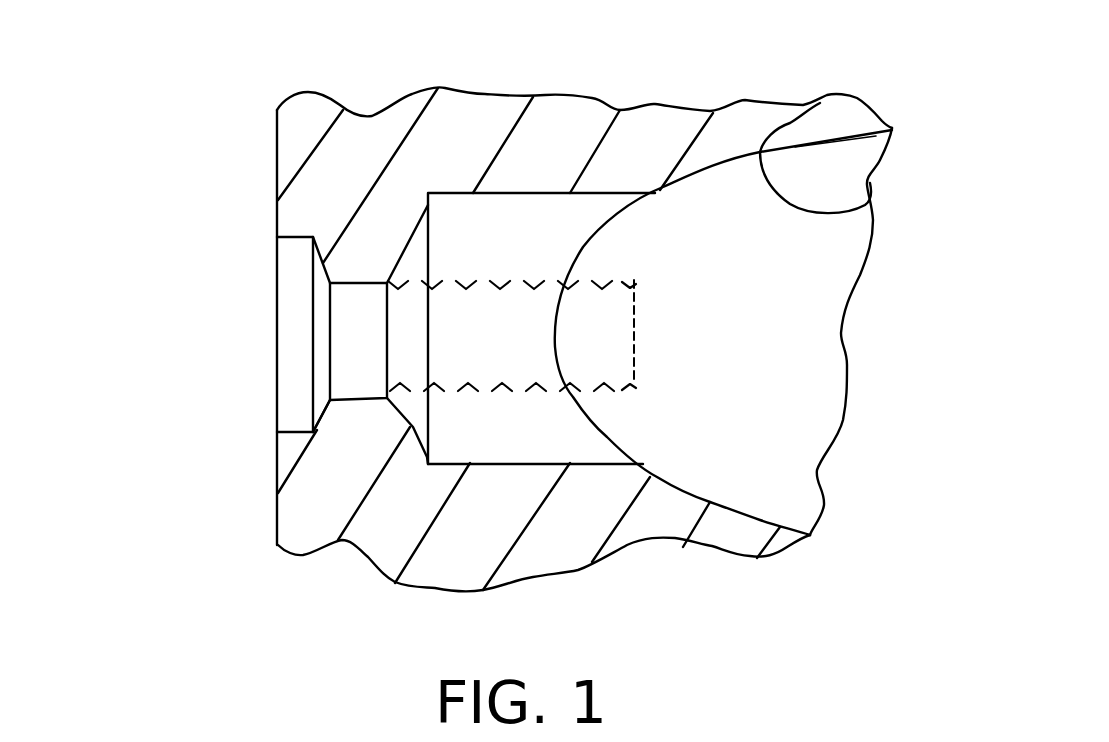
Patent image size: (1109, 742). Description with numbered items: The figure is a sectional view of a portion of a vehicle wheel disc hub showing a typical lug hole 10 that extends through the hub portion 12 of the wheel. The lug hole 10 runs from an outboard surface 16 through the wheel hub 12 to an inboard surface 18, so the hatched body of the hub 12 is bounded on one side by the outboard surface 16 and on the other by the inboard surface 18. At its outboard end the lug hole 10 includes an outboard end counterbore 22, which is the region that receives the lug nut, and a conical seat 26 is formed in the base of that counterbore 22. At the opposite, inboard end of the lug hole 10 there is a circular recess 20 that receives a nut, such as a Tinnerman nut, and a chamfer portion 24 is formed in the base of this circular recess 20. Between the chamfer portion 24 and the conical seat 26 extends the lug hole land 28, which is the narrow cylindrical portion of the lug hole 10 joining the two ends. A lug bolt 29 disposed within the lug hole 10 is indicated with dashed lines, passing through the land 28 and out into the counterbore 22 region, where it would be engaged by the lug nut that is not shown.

The lug hole 10 is at (213, 355).
The hub portion 12 is at (460, 130).
The outboard surface 16 is at (873, 216).
The inboard surface 18 is at (277, 147).
The circular recess 20 is at (268, 270).
The outboard end counterbore 22 is at (618, 437).
The chamfer portion 24 is at (322, 400).
The conical seat 26 is at (413, 262).
The lug hole land 28 is at (363, 368).
The lug bolt 29 is at (607, 327).